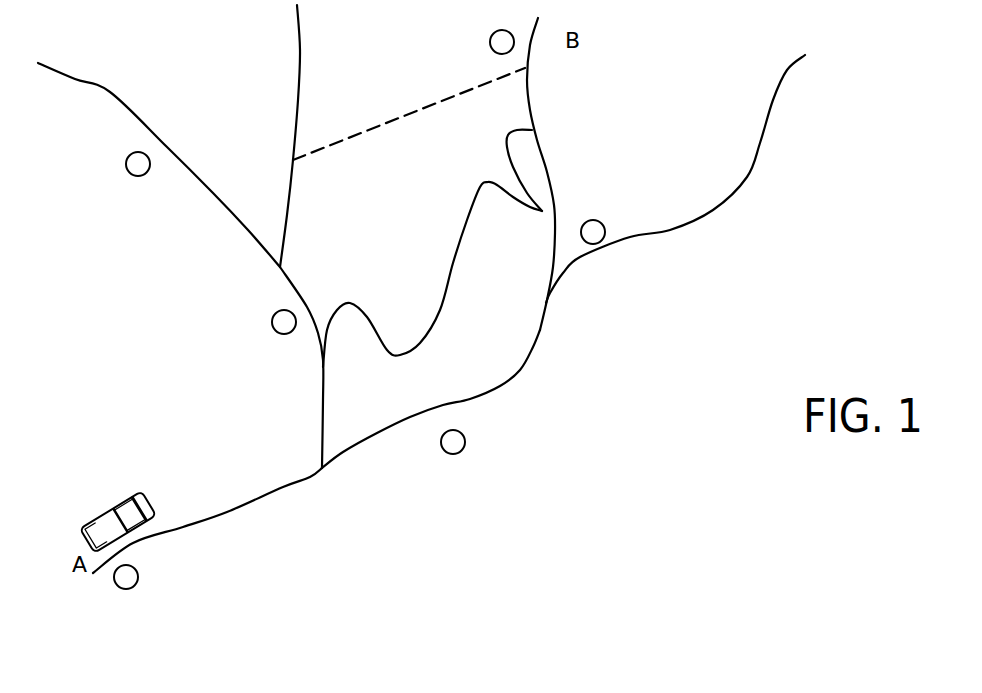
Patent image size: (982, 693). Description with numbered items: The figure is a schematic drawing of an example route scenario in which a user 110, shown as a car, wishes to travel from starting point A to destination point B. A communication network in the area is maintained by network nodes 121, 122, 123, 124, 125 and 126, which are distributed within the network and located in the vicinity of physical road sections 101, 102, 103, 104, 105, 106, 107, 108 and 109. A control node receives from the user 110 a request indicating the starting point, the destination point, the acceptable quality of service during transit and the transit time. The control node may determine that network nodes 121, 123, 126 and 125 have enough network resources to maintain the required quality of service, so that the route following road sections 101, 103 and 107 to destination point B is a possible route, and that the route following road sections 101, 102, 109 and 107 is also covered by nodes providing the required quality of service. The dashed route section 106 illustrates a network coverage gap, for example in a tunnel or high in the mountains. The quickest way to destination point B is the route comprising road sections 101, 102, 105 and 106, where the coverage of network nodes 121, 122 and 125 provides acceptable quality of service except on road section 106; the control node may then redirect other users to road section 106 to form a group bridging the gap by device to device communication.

The road section 101 is at (227, 512).
The road section 102 is at (323, 410).
The road section 103 is at (527, 365).
The road section 104 is at (110, 92).
The road section 105 is at (298, 115).
The road section 106 is at (393, 118).
The road section 107 is at (549, 187).
The road section 108 is at (670, 232).
The road section 109 is at (453, 267).
The user 110 is at (115, 502).
The network node 121 is at (138, 580).
The network node 122 is at (275, 315).
The network node 123 is at (446, 452).
The network node 124 is at (128, 172).
The network node 125 is at (490, 42).
The network node 126 is at (602, 223).